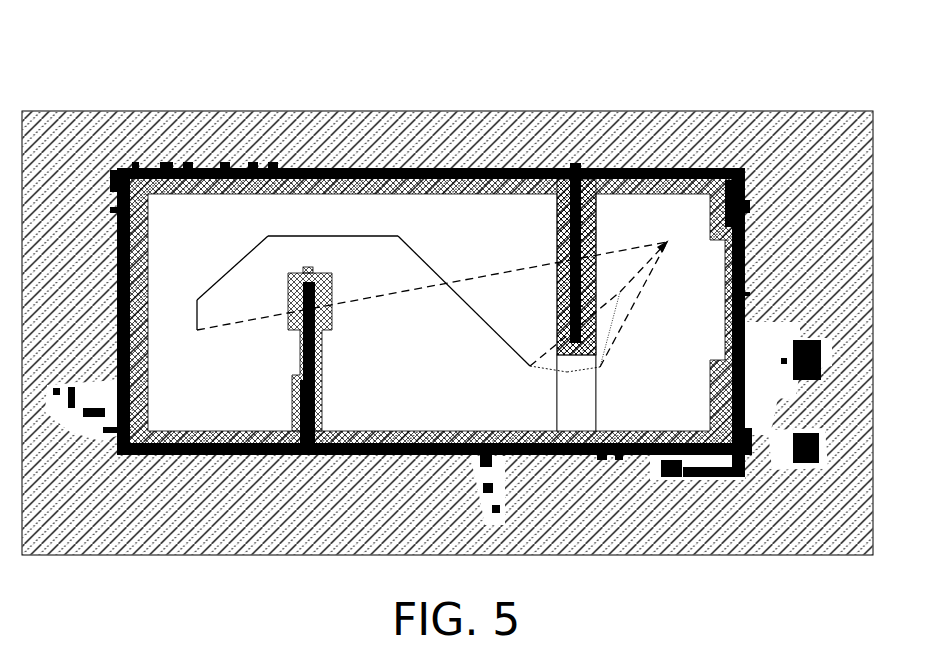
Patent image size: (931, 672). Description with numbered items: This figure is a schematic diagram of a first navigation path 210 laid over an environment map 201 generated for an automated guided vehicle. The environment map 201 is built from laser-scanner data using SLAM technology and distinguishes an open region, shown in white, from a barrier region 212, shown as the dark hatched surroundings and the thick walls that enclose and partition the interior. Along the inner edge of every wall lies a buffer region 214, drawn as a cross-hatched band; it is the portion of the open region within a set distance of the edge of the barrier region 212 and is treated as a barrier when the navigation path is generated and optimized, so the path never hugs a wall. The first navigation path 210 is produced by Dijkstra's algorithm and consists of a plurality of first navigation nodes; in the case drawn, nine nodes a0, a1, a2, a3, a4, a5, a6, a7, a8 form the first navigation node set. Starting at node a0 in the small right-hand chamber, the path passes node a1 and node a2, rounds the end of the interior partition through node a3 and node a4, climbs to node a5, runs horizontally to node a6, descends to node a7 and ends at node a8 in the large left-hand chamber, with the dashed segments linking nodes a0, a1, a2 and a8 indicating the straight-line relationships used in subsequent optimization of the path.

The environment map 201 is at (64, 72).
The first navigation path 210 is at (428, 229).
The barrier region 212 is at (448, 111).
The buffer region 214 is at (557, 307).
The first navigation node a0 is at (672, 235).
The first navigation node a1 is at (633, 267).
The first navigation node a2 is at (632, 317).
The first navigation node a3 is at (576, 382).
The first navigation node a4 is at (561, 342).
The first navigation node a5 is at (460, 288).
The first navigation node a6 is at (326, 223).
The first navigation node a7 is at (219, 272).
The first navigation node a8 is at (418, 293).